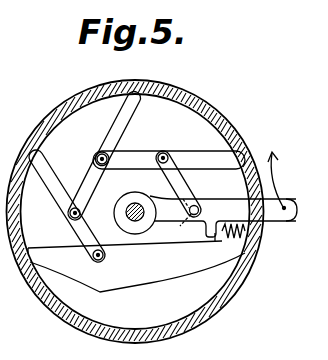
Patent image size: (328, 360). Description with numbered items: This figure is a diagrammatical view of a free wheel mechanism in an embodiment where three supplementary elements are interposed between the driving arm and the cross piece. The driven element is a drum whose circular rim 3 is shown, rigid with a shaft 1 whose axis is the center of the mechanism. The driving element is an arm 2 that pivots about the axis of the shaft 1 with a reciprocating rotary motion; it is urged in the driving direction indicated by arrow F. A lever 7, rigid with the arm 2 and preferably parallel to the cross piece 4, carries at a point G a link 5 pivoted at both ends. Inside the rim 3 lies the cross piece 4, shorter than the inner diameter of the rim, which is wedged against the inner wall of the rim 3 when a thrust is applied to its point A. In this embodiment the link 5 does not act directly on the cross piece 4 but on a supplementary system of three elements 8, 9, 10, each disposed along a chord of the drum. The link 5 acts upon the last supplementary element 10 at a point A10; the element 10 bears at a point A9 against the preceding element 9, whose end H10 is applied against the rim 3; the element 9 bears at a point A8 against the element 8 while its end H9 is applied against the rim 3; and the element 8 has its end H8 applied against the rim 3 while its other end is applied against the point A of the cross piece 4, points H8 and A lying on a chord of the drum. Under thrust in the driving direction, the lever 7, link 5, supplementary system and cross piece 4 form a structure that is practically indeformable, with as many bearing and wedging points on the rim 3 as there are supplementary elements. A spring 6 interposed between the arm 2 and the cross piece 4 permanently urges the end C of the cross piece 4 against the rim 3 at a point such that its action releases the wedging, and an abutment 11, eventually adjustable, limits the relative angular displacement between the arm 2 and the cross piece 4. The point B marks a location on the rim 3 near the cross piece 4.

The shaft 1 is at (133, 202).
The arm 2 is at (285, 208).
The rim 3 is at (184, 104).
The cross piece 4 is at (156, 272).
The link 5 is at (185, 197).
The spring 6 is at (252, 234).
The lever 7 is at (207, 200).
The supplementary element 8 is at (53, 188).
The supplementary element 9 is at (118, 122).
The supplementary element 10 is at (203, 152).
The abutment 11 is at (214, 234).
The thrust point A is at (98, 256).
The bearing point A8 is at (69, 217).
The bearing point A9 is at (98, 157).
The bearing point A10 is at (165, 152).
The ring point B is at (22, 258).
The end of cross piece C is at (250, 253).
The arrow F is at (281, 177).
The pivot point G is at (184, 222).
The end of supplementary element 8 H8 is at (40, 148).
The end of supplementary element 9 H9 is at (141, 100).
The end of supplementary element 10 H10 is at (243, 152).